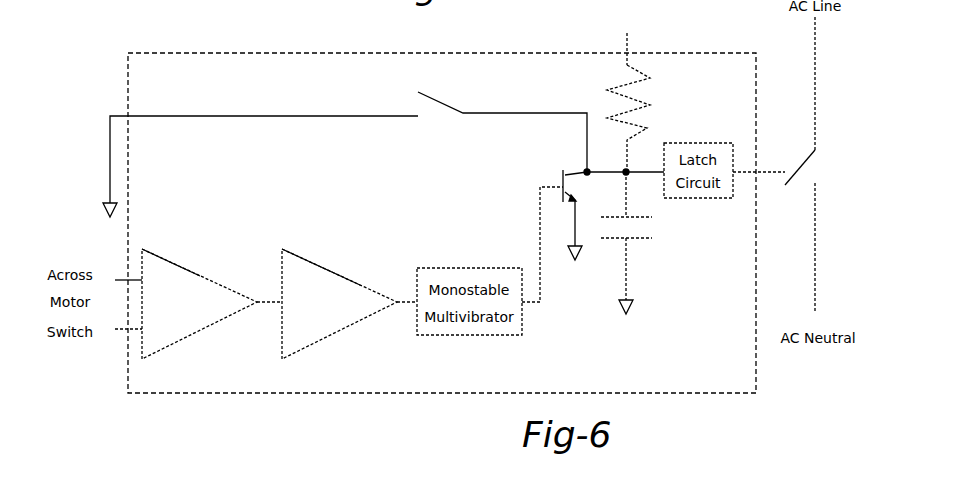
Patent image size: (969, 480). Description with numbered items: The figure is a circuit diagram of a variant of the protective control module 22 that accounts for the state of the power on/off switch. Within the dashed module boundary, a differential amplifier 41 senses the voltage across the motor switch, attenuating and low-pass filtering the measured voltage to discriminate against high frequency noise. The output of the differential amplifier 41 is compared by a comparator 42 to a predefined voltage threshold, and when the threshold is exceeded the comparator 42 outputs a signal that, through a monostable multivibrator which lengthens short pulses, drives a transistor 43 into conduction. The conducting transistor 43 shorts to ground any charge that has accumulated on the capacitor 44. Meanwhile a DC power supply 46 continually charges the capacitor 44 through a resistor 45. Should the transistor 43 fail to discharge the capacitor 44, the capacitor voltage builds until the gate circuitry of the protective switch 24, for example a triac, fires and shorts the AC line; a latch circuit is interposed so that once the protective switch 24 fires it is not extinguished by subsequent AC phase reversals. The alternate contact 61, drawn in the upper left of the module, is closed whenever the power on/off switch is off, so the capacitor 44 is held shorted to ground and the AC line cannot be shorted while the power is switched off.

The protective control module 22 is at (156, 52).
The protective switch 24 is at (800, 170).
The differential amplifier 41 is at (185, 268).
The comparator 42 is at (333, 268).
The transistor 43 is at (563, 176).
The capacitor 44 is at (650, 227).
The resistor 45 is at (648, 106).
The DC power supply 46 is at (640, 31).
The alternate contact 61 is at (437, 101).